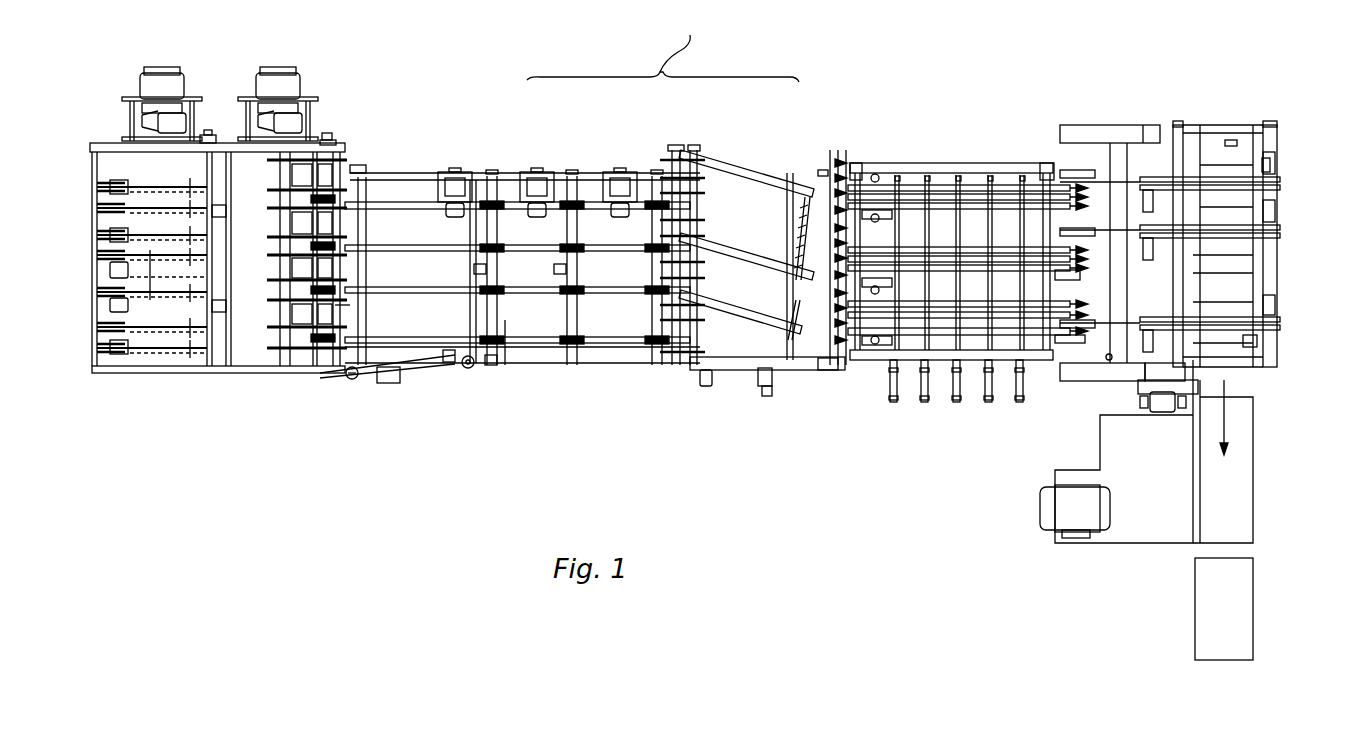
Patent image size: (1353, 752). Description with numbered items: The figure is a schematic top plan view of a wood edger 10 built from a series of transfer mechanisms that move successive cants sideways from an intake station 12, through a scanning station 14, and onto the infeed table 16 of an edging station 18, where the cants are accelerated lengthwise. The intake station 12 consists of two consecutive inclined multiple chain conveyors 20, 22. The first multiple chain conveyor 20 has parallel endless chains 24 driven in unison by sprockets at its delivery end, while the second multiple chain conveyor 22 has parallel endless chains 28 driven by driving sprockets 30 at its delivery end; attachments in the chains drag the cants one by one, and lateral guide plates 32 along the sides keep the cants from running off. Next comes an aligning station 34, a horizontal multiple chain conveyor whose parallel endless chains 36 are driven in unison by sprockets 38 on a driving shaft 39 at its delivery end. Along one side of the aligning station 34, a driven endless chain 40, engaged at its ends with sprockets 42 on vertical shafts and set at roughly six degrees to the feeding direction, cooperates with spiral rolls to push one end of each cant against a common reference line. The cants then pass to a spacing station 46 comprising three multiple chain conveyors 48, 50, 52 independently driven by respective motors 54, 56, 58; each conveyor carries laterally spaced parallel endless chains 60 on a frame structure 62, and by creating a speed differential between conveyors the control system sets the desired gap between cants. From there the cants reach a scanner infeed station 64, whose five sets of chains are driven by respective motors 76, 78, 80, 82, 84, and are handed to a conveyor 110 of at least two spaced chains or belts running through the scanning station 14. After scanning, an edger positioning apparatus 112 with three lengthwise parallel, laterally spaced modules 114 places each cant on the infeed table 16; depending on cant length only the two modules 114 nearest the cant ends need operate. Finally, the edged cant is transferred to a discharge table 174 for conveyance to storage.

The wood edger 10 is at (1338, 36).
The intake station 12 is at (175, 80).
The scanning station 14 is at (1080, 130).
The infeed table 16 is at (1285, 272).
The edging station 18 is at (1248, 463).
The multiple chain conveyor 20 is at (110, 140).
The multiple chain conveyor 22 is at (322, 140).
The endless chains 24 is at (168, 285).
The endless chains 28 is at (380, 120).
The driving sprockets 30 is at (336, 292).
The lateral guide plates 32 is at (248, 373).
The aligning station 34 is at (402, 165).
The endless chains 36 is at (418, 215).
The sprockets 38 is at (505, 175).
The driving shaft 39 is at (508, 345).
The driven endless chain 40 is at (328, 377).
The sprockets 42 is at (352, 381).
The spacing station 46 is at (663, 45).
The multiple chain conveyor 48 is at (520, 195).
The multiple chain conveyor 50 is at (650, 172).
The multiple chain conveyor 52 is at (735, 185).
The motor 54 is at (455, 170).
The motor 56 is at (620, 170).
The motor 58 is at (768, 388).
The endless chains 60 is at (525, 215).
The frame structure 62 is at (618, 363).
The scanner infeed station 64 is at (942, 183).
The motor 76 is at (892, 405).
The motor 78 is at (925, 405).
The motor 80 is at (958, 405).
The motor 82 is at (990, 405).
The motor 84 is at (1022, 405).
The conveyor 110 is at (1112, 170).
The edger positioning apparatus 112 is at (1282, 168).
The modules 114 is at (1288, 185).
The discharge table 174 is at (1207, 605).